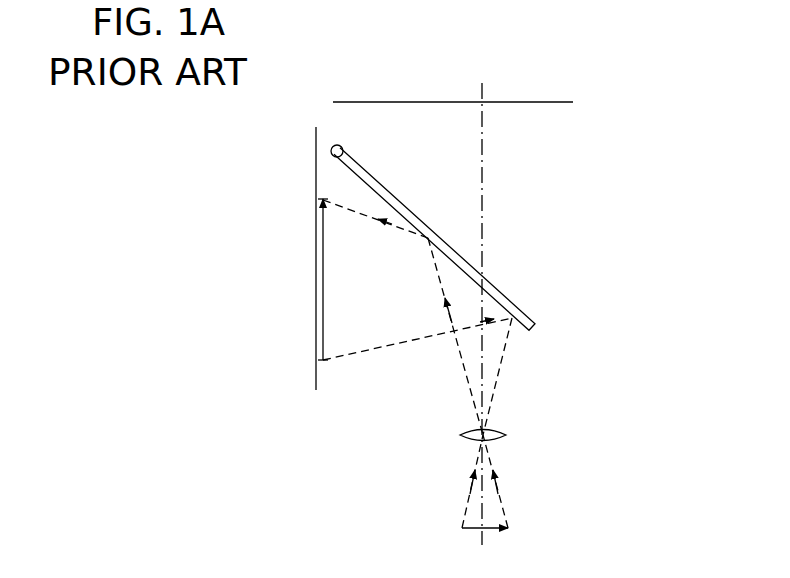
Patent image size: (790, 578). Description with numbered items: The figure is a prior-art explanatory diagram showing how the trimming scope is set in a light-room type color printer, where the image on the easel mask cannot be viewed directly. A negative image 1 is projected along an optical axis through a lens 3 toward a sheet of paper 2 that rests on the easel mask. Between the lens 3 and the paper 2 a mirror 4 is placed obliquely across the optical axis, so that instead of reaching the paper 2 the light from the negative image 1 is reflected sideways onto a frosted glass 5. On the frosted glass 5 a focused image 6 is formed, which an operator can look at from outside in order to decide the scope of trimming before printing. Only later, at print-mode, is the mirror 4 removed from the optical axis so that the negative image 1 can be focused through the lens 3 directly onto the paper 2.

The negative image 1 is at (490, 532).
The paper 2 is at (519, 102).
The lens 3 is at (506, 435).
The mirror 4 is at (510, 300).
The frosted glass 5 is at (316, 172).
The image 6 is at (323, 273).